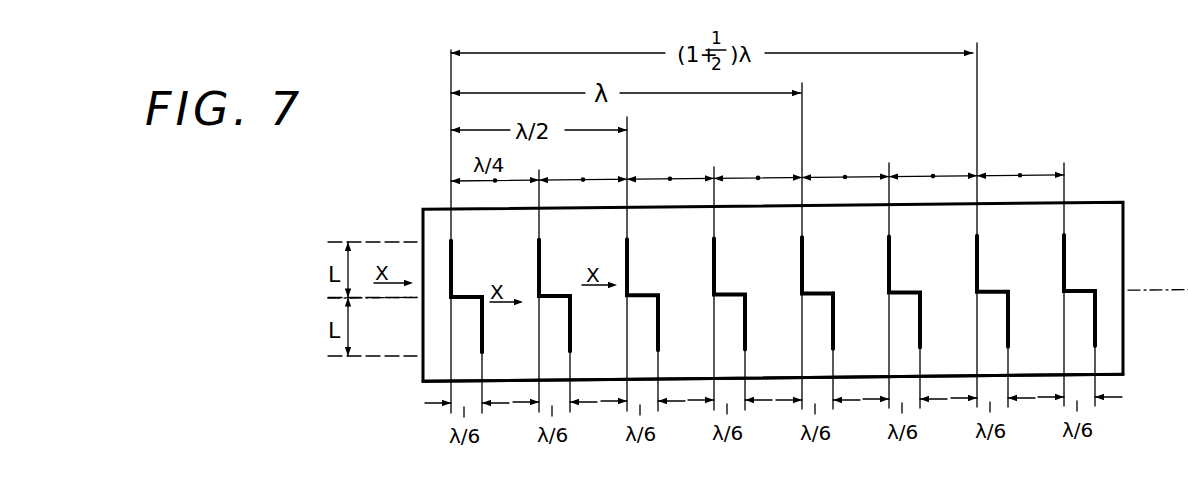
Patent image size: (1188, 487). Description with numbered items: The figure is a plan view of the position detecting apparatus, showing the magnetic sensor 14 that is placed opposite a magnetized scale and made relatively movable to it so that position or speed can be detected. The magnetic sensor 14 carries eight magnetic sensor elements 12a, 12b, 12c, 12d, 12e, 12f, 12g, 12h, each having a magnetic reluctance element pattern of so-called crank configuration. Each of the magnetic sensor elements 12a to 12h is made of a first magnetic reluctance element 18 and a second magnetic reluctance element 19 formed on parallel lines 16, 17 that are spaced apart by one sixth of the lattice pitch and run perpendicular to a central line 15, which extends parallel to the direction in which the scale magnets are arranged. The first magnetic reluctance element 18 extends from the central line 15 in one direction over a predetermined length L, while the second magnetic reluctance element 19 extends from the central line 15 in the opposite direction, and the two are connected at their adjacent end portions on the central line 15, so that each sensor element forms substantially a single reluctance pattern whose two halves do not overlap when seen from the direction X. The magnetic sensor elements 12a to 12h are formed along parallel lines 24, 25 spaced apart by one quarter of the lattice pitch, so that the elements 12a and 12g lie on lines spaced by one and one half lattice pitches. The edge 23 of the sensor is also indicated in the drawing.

The magnetic sensor element 12a is at (446, 300).
The magnetic sensor element 12b is at (535, 299).
The magnetic sensor element 12c is at (623, 298).
The magnetic sensor element 12d is at (710, 297).
The magnetic sensor element 12e is at (798, 296).
The magnetic sensor element 12f is at (886, 295).
The magnetic sensor element 12g is at (973, 294).
The magnetic sensor element 12h is at (1061, 293).
The magnetic sensor 14 is at (1110, 203).
The central line 15 is at (1164, 289).
The parallel line 16 is at (449, 397).
The parallel line 17 is at (483, 394).
The first magnetic reluctance element 18 is at (453, 259).
The second magnetic reluctance element 19 is at (484, 350).
The substrate edge 23 is at (1113, 377).
The parallel line 24 is at (450, 193).
The parallel line 25 is at (540, 181).